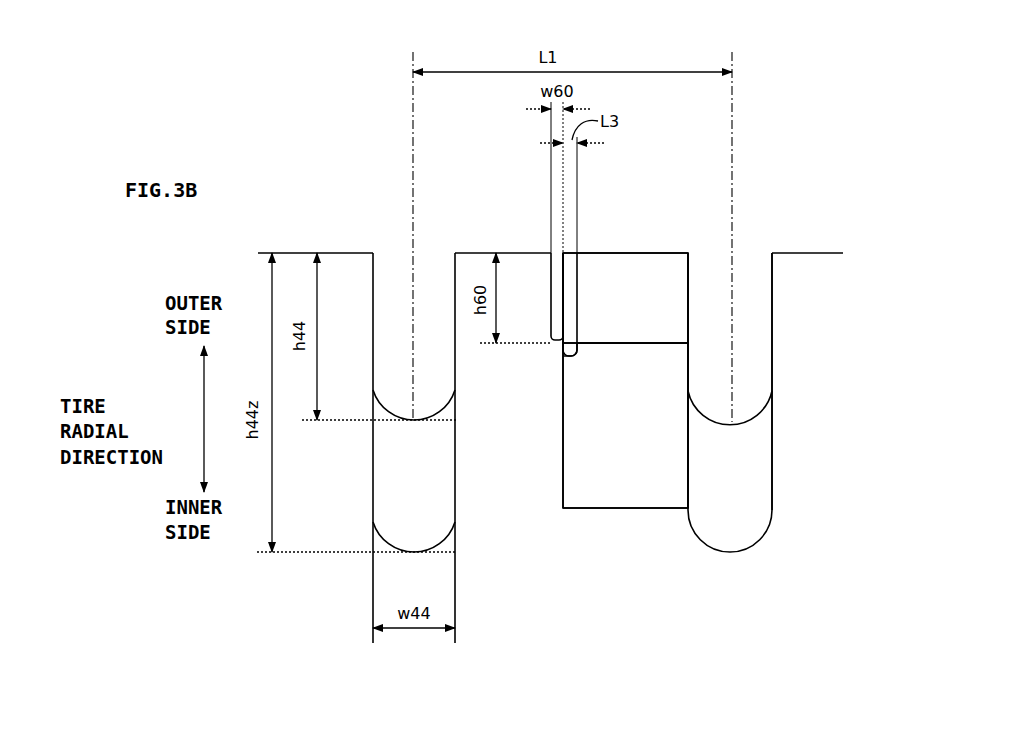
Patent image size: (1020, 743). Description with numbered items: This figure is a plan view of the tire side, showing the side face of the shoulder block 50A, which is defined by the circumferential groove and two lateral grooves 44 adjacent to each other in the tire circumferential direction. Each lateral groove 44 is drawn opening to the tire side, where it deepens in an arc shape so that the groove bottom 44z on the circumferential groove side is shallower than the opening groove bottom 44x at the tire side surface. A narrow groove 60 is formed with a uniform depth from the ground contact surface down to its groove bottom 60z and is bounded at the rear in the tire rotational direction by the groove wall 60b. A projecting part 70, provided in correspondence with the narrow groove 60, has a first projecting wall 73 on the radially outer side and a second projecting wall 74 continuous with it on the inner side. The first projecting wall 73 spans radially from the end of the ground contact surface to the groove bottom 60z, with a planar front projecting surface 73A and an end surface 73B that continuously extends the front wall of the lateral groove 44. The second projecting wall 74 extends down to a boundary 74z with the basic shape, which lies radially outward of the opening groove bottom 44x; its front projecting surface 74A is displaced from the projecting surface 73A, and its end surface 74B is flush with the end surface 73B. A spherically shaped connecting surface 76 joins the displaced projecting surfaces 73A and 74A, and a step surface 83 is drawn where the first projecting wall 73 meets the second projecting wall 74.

The lateral groove 44 is at (423, 366).
The groove bottom of the lateral groove 44z is at (414, 421).
The opening groove bottom 44x is at (414, 553).
The shoulder block 50A is at (345, 248).
The narrow groove 60 is at (529, 260).
The groove wall on the rear side in the tire rotational direction of the narrow groo 60b is at (569, 250).
The groove bottom of the narrow groove 60z is at (553, 344).
The projecting part 70 is at (661, 511).
The first projecting wall 73 is at (646, 280).
The projecting surface of the first projecting wall 73A is at (571, 275).
The end surface of the first projecting wall 73B is at (690, 311).
The second projecting wall 74 is at (593, 477).
The projecting surface of the second projecting wall 74A is at (562, 418).
The end surface of the second projecting wall 74B is at (690, 440).
The boundary 74z is at (600, 512).
The connecting surface 76 is at (562, 353).
The step surface 83 is at (632, 347).